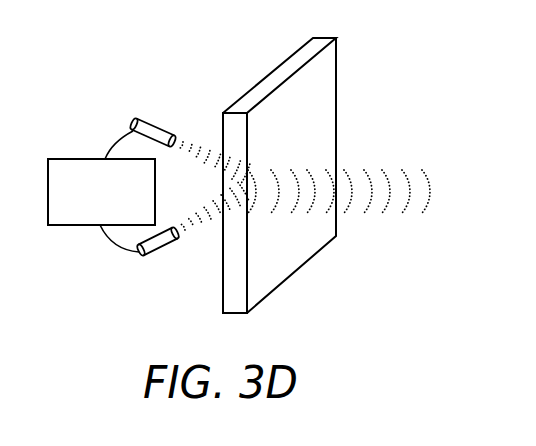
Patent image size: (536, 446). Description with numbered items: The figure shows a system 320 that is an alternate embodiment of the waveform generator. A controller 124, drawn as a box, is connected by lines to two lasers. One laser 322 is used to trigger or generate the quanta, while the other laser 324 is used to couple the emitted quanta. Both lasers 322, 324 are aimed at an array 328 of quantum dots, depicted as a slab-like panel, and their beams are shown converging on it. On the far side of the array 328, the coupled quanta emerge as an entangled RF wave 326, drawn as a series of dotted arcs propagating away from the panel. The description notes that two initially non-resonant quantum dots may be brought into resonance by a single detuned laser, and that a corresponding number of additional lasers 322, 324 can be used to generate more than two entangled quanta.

The system 320 is at (143, 66).
The controller 124 is at (82, 216).
The laser 322 is at (146, 117).
The laser 324 is at (155, 257).
The entangled RF wave 326 is at (365, 170).
The array of quantum dots 328 is at (318, 42).